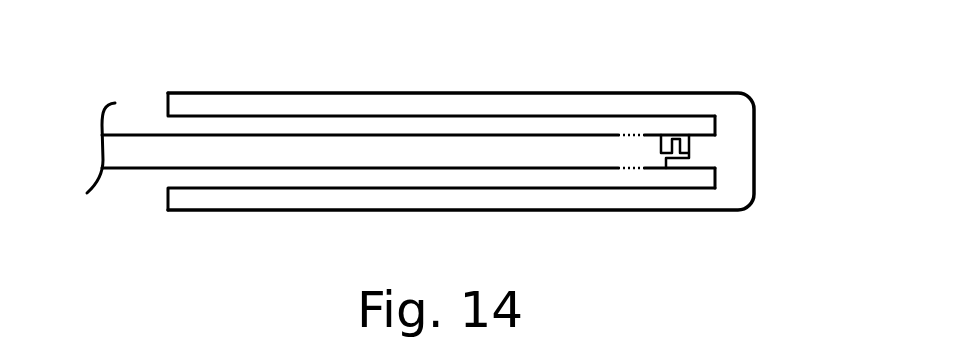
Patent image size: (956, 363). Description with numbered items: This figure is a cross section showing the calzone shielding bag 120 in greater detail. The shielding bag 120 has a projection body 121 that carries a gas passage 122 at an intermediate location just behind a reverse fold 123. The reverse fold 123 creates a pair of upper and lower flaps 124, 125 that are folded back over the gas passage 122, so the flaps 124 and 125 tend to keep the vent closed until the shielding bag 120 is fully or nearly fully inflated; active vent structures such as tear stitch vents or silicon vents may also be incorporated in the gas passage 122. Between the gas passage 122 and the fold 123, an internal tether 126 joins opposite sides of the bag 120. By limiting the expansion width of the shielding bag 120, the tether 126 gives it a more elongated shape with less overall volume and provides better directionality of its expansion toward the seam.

The shielding bag 120 is at (125, 78).
The projection body 121 is at (152, 169).
The gas passage 122 is at (638, 135).
The reverse fold 123 is at (754, 130).
The upper flap 124 is at (268, 92).
The lower flap 125 is at (252, 210).
The internal tether 126 is at (689, 153).